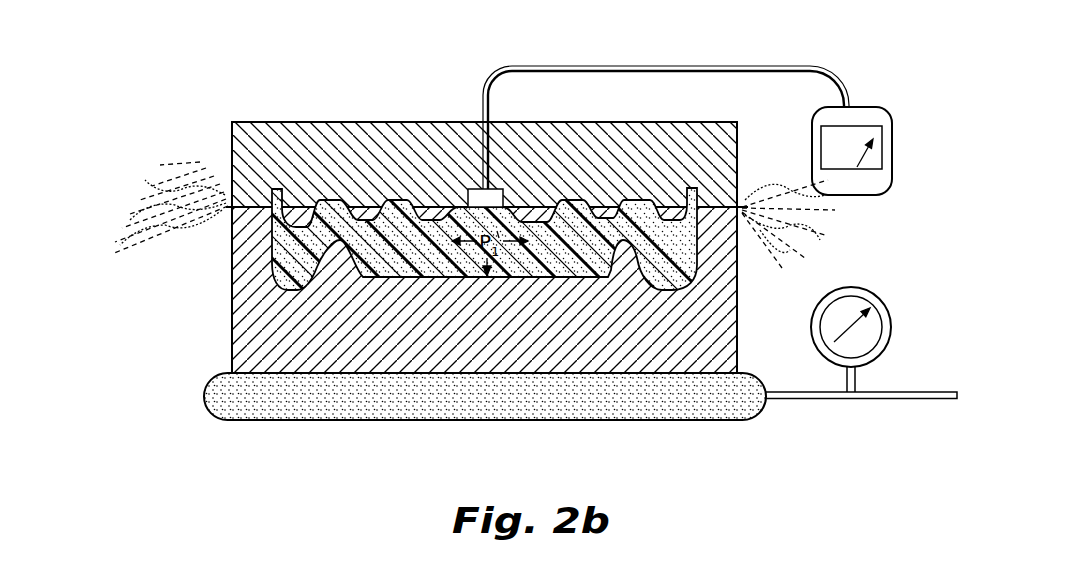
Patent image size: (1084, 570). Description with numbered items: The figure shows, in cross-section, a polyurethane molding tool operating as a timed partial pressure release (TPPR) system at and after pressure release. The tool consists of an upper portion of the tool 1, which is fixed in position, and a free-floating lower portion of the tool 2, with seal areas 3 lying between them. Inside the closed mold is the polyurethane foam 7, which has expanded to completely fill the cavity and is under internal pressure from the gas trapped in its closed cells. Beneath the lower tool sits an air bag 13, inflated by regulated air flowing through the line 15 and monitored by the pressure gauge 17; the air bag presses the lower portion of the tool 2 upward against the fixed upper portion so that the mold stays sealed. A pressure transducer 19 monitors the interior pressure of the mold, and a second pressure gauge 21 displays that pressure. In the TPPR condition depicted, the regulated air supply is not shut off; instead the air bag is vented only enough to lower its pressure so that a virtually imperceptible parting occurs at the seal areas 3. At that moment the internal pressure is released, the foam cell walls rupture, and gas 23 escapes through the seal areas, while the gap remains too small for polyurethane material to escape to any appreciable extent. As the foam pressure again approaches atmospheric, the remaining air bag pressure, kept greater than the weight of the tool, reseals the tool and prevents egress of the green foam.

The upper portion of the tool 1 is at (232, 137).
The lower portion of the tool 2 is at (232, 320).
The seal areas 3 is at (232, 207).
The polyurethane foam 7 is at (583, 278).
The air bag 13 is at (303, 421).
The line 15 is at (802, 402).
The pressure gauge 17 is at (884, 300).
The pressure transducer 19 is at (466, 189).
The pressure gauge 21 is at (878, 103).
The gas 23 is at (454, 225).